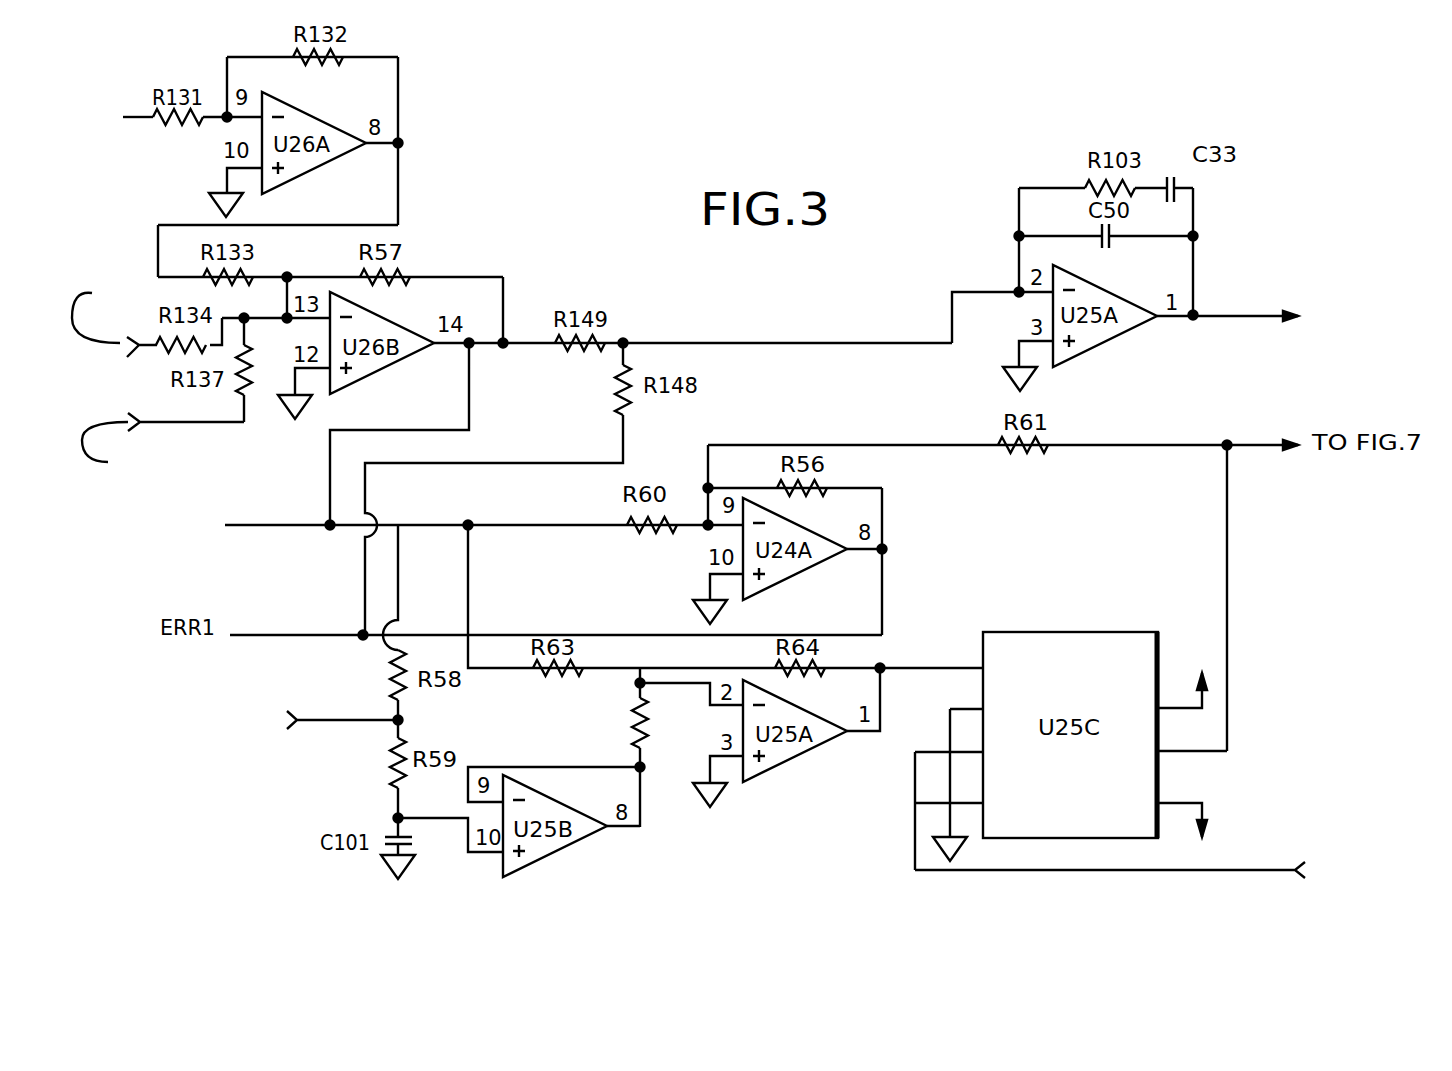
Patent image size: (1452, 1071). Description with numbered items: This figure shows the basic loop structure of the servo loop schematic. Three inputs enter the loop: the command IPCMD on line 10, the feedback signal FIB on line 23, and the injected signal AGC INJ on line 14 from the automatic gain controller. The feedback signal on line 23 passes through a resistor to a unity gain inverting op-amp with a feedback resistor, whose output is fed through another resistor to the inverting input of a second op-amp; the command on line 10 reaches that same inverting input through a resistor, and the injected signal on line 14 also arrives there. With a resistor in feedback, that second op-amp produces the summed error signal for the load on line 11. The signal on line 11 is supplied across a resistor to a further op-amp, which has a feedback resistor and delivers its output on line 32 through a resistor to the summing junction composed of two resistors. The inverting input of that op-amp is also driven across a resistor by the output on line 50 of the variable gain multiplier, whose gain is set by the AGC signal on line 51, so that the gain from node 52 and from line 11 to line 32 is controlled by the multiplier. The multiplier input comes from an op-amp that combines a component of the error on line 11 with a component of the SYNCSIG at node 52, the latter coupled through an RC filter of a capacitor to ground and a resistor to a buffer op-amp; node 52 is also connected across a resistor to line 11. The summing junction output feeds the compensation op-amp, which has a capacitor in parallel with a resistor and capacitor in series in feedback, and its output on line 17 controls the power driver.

The line 23 is at (137, 117).
The line 10 is at (142, 353).
The line 14 is at (147, 420).
The line 11 is at (504, 341).
The line 17 is at (1228, 319).
The line 32 is at (277, 526).
The node 52 is at (331, 722).
The line 50 is at (1227, 563).
The line 51 is at (1268, 870).